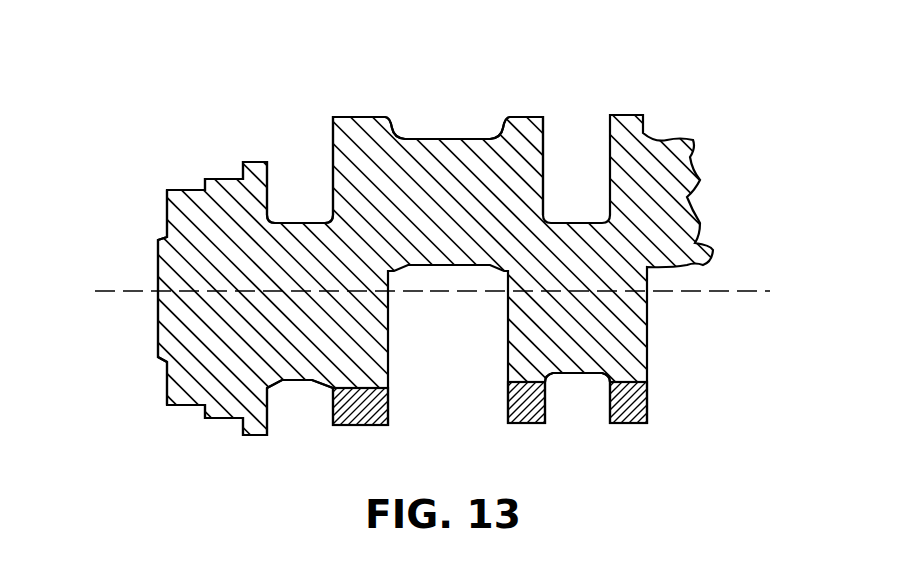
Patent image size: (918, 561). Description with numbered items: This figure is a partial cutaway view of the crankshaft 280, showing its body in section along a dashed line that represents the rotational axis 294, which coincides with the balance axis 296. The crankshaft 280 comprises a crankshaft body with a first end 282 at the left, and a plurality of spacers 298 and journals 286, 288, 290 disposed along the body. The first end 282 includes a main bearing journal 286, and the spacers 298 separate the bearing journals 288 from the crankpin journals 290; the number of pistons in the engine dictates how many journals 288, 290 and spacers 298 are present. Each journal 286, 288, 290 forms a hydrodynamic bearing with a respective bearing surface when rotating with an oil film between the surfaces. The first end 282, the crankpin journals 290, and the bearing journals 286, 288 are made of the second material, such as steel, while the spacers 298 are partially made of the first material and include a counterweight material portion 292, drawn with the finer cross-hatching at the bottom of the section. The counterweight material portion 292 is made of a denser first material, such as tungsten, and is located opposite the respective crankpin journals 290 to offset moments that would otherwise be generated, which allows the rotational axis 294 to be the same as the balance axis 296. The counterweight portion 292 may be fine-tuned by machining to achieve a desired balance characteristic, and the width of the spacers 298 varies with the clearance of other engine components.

The crankshaft 280 is at (609, 56).
The first end 282 is at (167, 360).
The main bearing journal 286 is at (213, 178).
The bearing journal 288 is at (303, 232).
The crankpin journal 290 is at (417, 140).
The counterweight material portion 292 is at (360, 417).
The rotational axis 294 is at (145, 292).
The balance axis 296 is at (718, 290).
The spacer 298 is at (358, 123).